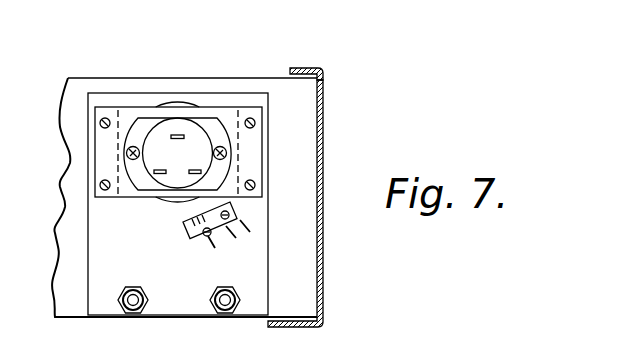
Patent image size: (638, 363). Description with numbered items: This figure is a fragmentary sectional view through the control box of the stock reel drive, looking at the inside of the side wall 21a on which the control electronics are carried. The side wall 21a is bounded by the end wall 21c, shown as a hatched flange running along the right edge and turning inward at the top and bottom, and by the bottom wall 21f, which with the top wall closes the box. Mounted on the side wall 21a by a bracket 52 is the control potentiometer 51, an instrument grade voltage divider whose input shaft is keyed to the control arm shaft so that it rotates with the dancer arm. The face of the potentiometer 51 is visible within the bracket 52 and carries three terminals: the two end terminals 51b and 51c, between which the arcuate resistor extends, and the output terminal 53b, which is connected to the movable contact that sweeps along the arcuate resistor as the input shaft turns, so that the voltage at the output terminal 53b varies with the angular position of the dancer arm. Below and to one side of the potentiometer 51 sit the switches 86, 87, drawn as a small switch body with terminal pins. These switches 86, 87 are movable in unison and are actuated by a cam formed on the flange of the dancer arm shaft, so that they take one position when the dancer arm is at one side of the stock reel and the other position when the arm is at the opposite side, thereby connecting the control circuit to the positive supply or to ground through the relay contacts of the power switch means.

The bottom wall 21f is at (0, 3).
The side wall 21a is at (305, 93).
The end wall 21c is at (327, 145).
The bracket 52 is at (227, 112).
The control potentiometer 51 is at (180, 122).
The output terminal 53b is at (182, 137).
The end terminal 51c is at (158, 176).
The end terminal 51b is at (193, 176).
The switch 86 is at (209, 245).
The switch 87 is at (202, 230).